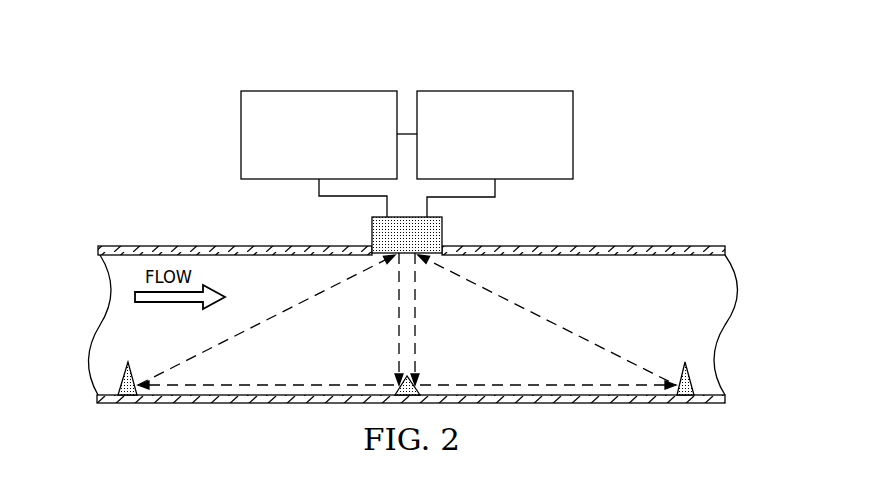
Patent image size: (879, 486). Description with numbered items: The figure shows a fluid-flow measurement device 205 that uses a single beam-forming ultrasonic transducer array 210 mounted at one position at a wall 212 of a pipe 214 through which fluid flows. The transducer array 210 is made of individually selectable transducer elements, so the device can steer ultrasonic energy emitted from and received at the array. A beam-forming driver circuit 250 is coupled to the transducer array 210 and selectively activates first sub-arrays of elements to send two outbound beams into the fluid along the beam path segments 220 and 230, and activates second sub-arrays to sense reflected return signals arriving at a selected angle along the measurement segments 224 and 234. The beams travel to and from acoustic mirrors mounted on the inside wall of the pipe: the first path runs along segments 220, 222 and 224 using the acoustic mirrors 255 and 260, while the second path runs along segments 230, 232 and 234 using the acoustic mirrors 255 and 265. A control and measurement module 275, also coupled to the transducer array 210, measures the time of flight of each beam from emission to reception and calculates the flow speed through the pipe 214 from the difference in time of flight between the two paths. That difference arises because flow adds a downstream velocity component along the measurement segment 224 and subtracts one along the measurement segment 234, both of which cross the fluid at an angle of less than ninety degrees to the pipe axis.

The fluid-flow measurement device 205 is at (495, 68).
The beam-forming driver circuit 250 is at (241, 125).
The control and measurement module 275 is at (573, 123).
The beam-forming ultrasonic transducer array 210 is at (372, 233).
The wall 212 is at (570, 245).
The pipe 214 is at (102, 312).
The beam path segment 220 is at (399, 325).
The beam path segment 230 is at (415, 325).
The beam path segment 222 is at (275, 383).
The beam path segment 232 is at (540, 383).
The measurement segment 224 is at (298, 303).
The measurement segment 234 is at (553, 321).
The acoustic mirror 255 is at (395, 392).
The acoustic mirror 260 is at (117, 364).
The acoustic mirror 265 is at (689, 375).